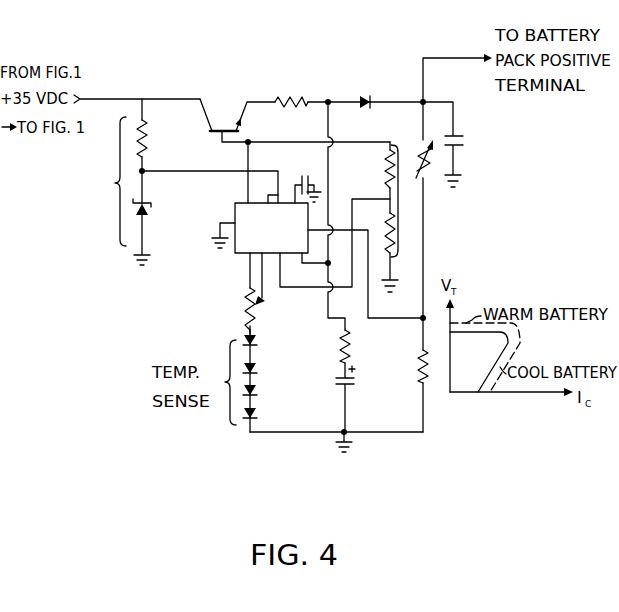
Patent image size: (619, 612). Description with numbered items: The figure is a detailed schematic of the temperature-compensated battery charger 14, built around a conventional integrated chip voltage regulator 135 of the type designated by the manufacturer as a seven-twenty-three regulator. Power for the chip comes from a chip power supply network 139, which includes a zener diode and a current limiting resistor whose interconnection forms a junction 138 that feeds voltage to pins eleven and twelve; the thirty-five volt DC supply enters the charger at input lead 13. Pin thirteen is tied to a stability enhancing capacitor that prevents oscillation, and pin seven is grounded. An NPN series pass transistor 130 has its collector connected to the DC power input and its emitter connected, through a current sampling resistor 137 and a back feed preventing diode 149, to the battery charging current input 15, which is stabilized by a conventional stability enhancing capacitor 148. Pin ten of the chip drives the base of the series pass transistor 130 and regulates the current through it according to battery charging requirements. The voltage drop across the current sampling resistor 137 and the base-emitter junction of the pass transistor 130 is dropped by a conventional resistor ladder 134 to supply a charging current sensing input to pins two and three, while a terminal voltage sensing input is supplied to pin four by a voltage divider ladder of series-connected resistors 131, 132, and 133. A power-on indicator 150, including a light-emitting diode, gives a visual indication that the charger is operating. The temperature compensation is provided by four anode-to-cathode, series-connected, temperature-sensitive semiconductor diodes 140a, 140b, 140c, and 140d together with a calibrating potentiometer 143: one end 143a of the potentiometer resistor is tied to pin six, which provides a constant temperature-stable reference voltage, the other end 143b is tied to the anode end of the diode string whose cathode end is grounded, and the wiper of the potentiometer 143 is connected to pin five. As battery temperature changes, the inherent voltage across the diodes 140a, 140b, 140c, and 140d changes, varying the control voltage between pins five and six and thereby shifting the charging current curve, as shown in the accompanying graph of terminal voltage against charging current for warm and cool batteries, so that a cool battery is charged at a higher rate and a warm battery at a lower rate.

The input lead from FIG. 1 (+35 VDC) 13 is at (106, 99).
The battery charger 14 is at (244, 68).
The battery charging current input 15 is at (423, 58).
The NPN series pass transistor 130 is at (214, 133).
The series-connected resistor 131 is at (423, 398).
The series-connected resistor 132 is at (424, 277).
The series-connected resistor 133 is at (428, 168).
The resistor ladder 134 is at (405, 217).
The integrated chip voltage regulator 135 is at (235, 216).
The current sampling resistor 137 is at (286, 102).
The junction 138 is at (143, 170).
The chip power supply network 139 is at (109, 191).
The temperature-sensitive semiconductor diode 140a is at (257, 347).
The temperature-sensitive semiconductor diode 140b is at (257, 375).
The temperature-sensitive semiconductor diode 140c is at (257, 398).
The temperature-sensitive semiconductor diode 140d is at (257, 421).
The calibrating potentiometer 143 is at (250, 312).
The end of potentiometer resistor 143a is at (250, 281).
The other end of potentiometer resistor 143b is at (258, 330).
The stability enhancing capacitor 148 is at (453, 136).
The back feed preventing diode 149 is at (377, 84).
The power-on indicator 150 is at (355, 327).